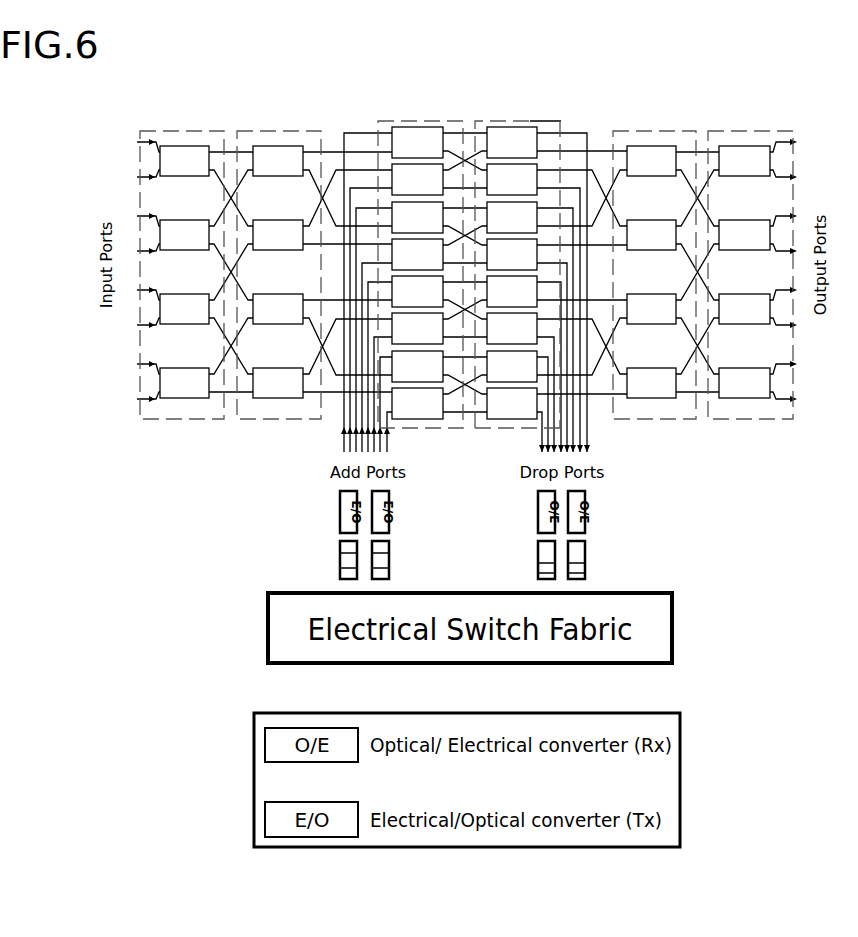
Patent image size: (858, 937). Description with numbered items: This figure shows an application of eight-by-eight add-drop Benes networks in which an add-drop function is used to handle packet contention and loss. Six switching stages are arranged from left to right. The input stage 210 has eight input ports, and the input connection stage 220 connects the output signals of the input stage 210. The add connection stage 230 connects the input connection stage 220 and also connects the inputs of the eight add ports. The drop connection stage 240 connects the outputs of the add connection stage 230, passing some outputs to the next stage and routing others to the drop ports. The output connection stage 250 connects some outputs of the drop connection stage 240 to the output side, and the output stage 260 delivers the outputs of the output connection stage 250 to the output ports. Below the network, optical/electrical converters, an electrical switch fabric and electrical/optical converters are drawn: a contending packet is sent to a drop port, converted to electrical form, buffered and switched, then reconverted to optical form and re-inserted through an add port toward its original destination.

The input stage 210 is at (188, 130).
The input connection stage 220 is at (281, 130).
The add connection stage 230 is at (427, 119).
The drop connection stage 240 is at (517, 119).
The output connection stage 250 is at (653, 130).
The output stage 260 is at (750, 130).